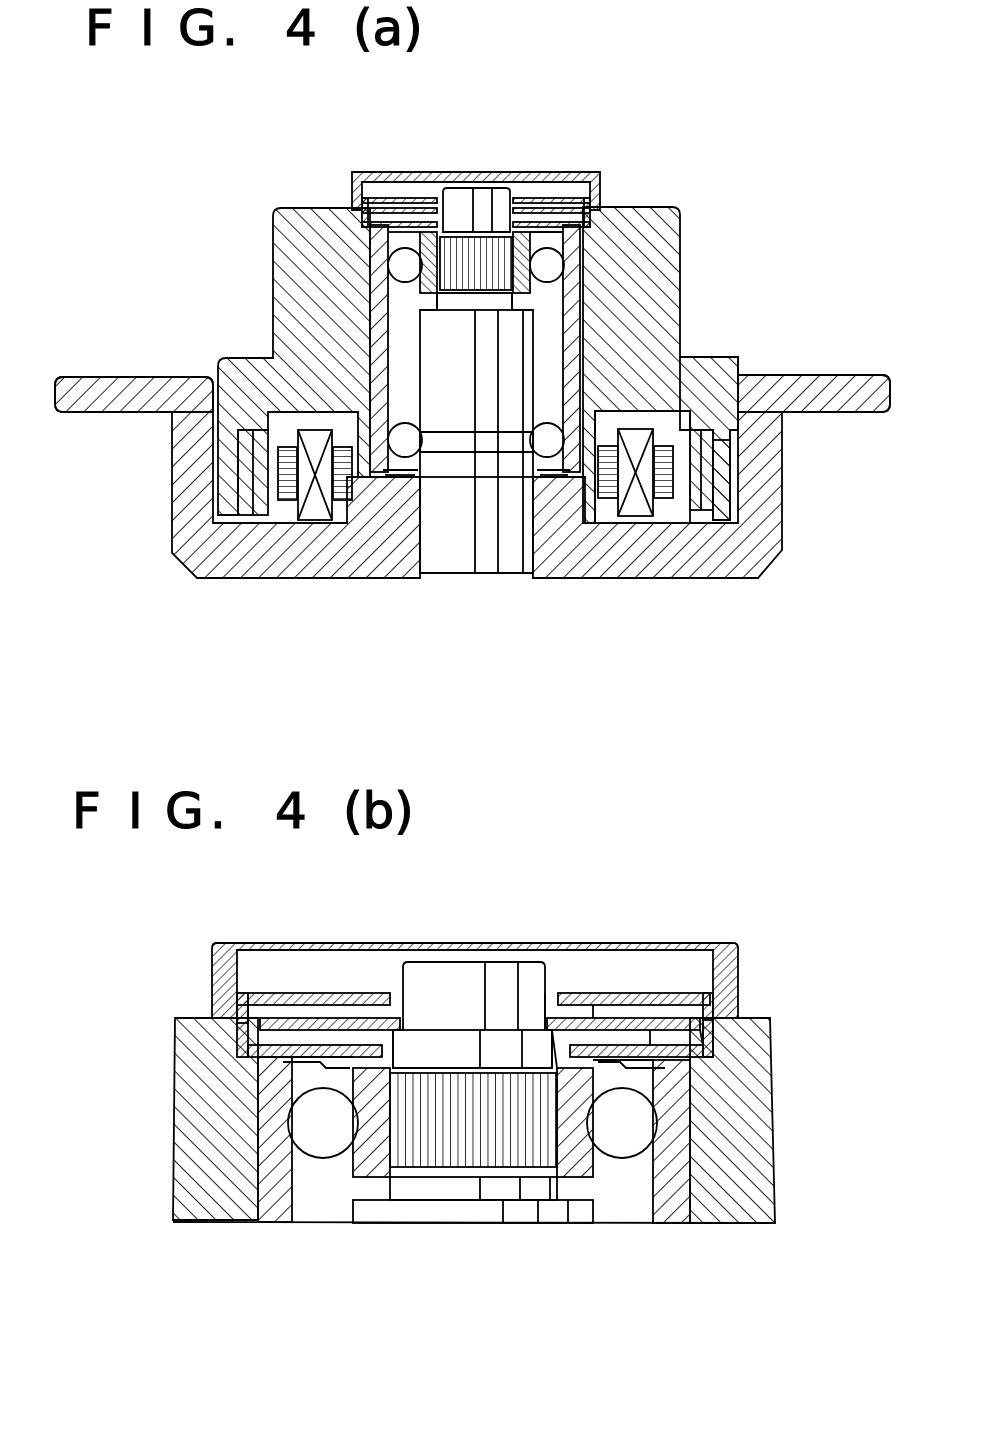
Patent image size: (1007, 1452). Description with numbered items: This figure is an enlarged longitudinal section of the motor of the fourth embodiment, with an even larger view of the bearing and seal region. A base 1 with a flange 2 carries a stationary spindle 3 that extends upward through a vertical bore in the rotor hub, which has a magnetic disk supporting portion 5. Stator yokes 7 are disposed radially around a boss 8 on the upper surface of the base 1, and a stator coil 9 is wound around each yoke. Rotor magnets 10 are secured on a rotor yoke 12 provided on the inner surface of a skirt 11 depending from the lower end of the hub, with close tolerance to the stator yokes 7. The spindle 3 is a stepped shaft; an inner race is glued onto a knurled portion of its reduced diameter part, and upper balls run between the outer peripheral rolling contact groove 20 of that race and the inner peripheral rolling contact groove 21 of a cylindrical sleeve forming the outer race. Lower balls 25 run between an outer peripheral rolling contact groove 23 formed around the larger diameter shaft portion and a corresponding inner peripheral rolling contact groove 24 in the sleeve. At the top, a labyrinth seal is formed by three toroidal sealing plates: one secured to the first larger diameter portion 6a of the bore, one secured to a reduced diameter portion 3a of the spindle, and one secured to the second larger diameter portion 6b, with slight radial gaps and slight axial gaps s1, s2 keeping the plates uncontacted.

The base 1 is at (706, 568).
The flange 2 is at (860, 406).
The stational spindle 3 is at (353, 380).
The reduced diameter portion 3a is at (453, 980).
The magnetic disk supporting portion 5 is at (701, 355).
The first larger diameter portion 6a is at (705, 1030).
The second larger diameter portion 6b is at (705, 998).
The stator york 7 is at (663, 498).
The boss 8 is at (600, 470).
The stator coil 9 is at (632, 490).
The rotor magnet 10 is at (687, 505).
The skirt 11 is at (728, 468).
The rotor york 12 is at (717, 490).
The outer peripheral rolling contact groove 20 is at (355, 1185).
The inner peripheral rolling contact groove 21 is at (300, 1135).
The outer peripheral rolling contact groove 23 is at (447, 442).
The inner peripheral rolling contact groove 24 is at (385, 472).
The balls 25 is at (404, 465).
The axial gap s1 is at (605, 1015).
The axial gap s2 is at (650, 1045).